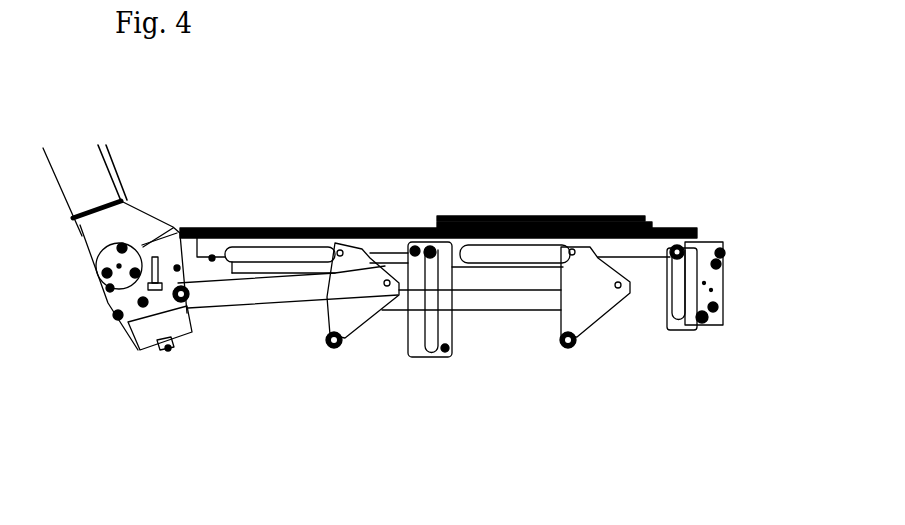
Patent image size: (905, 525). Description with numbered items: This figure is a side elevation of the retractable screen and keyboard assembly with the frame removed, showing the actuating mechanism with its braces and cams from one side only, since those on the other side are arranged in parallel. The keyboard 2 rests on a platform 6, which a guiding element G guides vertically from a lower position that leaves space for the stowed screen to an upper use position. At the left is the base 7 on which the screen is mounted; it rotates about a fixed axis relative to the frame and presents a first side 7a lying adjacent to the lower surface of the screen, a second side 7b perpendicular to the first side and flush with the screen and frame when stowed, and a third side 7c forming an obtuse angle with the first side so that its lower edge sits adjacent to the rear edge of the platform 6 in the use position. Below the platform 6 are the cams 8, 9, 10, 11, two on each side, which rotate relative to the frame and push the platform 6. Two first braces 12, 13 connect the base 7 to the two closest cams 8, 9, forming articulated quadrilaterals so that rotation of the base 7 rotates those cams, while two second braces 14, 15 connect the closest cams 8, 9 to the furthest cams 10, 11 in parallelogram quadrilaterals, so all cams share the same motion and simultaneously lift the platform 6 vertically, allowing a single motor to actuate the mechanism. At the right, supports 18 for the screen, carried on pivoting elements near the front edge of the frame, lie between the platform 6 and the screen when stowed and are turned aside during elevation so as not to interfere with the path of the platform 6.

The keyboard 2 is at (438, 196).
The platform 6 is at (433, 221).
The base 7 is at (141, 319).
The first side 7a is at (123, 202).
The second side 7b is at (82, 238).
The third side 7c is at (173, 227).
The cam 8 is at (338, 358).
The cam 9 is at (338, 358).
The cam 10 is at (642, 345).
The cam 11 is at (642, 345).
The first brace 12 is at (288, 356).
The first brace 13 is at (288, 356).
The second brace 14 is at (473, 381).
The second brace 15 is at (473, 381).
The support 18 is at (724, 245).
The guiding element G is at (413, 357).